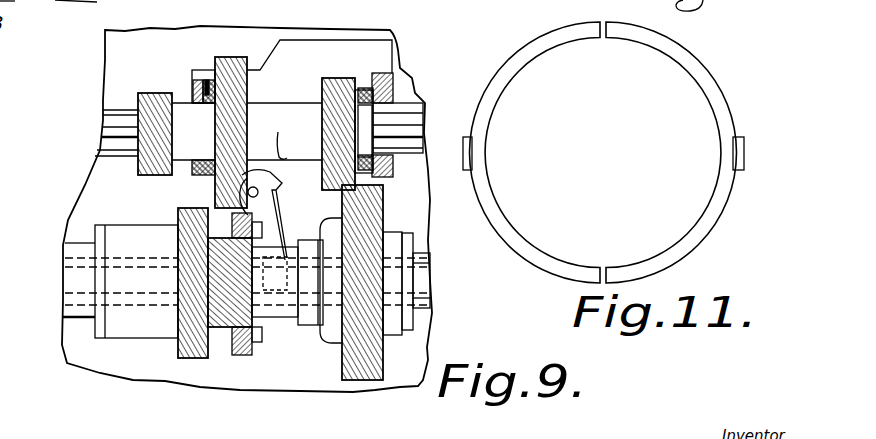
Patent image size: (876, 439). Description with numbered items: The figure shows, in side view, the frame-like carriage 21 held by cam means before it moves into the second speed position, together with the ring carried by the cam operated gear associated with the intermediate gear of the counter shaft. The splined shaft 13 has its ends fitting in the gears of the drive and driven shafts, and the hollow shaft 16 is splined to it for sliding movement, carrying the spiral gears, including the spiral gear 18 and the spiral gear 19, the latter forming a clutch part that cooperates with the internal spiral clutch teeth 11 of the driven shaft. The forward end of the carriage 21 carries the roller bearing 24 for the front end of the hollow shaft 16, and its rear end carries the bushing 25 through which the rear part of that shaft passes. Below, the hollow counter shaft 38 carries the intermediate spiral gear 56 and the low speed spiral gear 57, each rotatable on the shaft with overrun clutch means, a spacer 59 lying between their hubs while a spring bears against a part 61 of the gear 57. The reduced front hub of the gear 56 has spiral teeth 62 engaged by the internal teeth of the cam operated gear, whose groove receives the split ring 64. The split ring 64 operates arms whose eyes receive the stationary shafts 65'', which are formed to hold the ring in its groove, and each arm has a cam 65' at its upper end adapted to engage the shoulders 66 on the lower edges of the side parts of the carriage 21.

In FIG. 9, the shoulders 66 is at (45, 0).
In FIG. 9, the carriage 21 is at (290, 62).
In FIG. 9, the spiral gear 19 is at (152, 97).
In FIG. 9, the hollow shaft 16 is at (263, 110).
In FIG. 9, the bushing 25 is at (207, 85).
In FIG. 9, the spiral gear 18 is at (230, 57).
In FIG. 9, the internal spiral clutch teeth 11 is at (333, 82).
In FIG. 9, the roller bearing 24 is at (382, 88).
In FIG. 9, the splined shaft 13 is at (407, 122).
In FIG. 9, the intermediate spiral gear 56 is at (278, 134).
In FIG. 9, the cam 65' is at (282, 196).
In FIG. 9, the stationary shafts 65'' is at (288, 215).
In FIG. 9, the counter shaft 38 is at (77, 317).
In FIG. 9, the spiral teeth 62 is at (223, 337).
In FIG. 9, the split ring 64 is at (257, 333).
In FIG. 11, the split ring 64 is at (532, 46).
In FIG. 9, the spacer 59 is at (297, 323).
In FIG. 9, the low speed spiral gear 57 is at (380, 385).
In FIG. 9, the part of the gear 61 is at (428, 323).